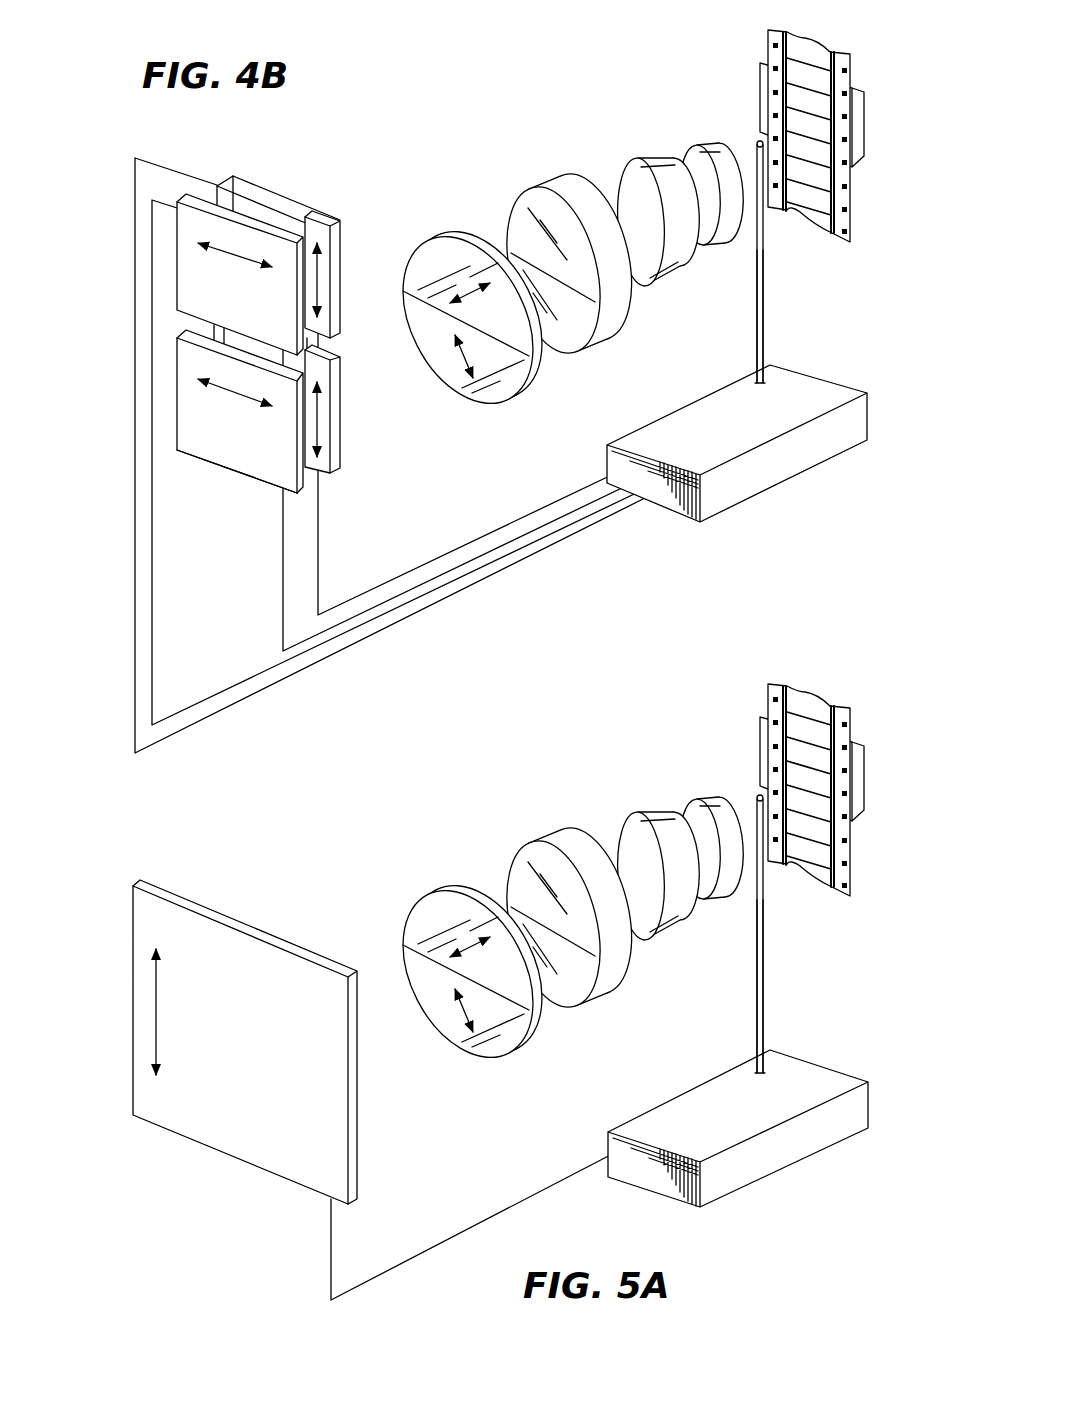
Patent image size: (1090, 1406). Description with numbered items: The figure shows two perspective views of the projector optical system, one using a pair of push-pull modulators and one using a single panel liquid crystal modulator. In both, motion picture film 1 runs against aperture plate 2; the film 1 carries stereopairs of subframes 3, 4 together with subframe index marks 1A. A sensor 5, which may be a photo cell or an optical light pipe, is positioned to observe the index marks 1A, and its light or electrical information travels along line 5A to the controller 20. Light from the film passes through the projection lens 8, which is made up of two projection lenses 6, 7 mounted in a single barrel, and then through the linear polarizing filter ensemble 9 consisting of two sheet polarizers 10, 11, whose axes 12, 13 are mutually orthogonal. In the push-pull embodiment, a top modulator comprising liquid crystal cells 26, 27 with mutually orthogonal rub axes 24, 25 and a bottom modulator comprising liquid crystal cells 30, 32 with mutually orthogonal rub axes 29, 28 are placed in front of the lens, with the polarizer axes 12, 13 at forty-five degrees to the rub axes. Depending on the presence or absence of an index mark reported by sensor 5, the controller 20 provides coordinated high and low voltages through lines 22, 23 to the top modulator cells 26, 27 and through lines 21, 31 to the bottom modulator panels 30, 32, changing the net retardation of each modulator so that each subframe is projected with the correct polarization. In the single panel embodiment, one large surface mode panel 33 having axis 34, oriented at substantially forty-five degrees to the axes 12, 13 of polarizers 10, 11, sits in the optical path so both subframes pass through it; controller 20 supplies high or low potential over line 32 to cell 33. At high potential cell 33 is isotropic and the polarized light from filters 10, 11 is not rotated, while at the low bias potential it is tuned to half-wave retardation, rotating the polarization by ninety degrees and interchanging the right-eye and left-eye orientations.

In FIG. 4B, the motion picture film 1 is at (838, 53).
In FIG. 5A, the motion picture film 1 is at (809, 775).
In FIG. 4B, the subframe index marks 1A is at (777, 68).
In FIG. 5A, the subframe index marks 1A is at (773, 779).
In FIG. 4B, the aperture plate 2 is at (860, 88).
In FIG. 5A, the aperture plate 2 is at (817, 744).
In FIG. 4B, the subframe 3 is at (818, 133).
In FIG. 5A, the subframe 3 is at (839, 785).
In FIG. 4B, the subframe 4 is at (832, 108).
In FIG. 5A, the subframe 4 is at (834, 826).
In FIG. 4B, the sensor 5 is at (757, 143).
In FIG. 5A, the sensor 5 is at (757, 797).
In FIG. 4B, the line 5A is at (763, 285).
In FIG. 5A, the line 5A is at (763, 940).
In FIG. 4B, the projection lens 6 is at (636, 164).
In FIG. 5A, the projection lens 6 is at (660, 855).
In FIG. 4B, the projection lens 7 is at (606, 333).
In FIG. 5A, the projection lens 7 is at (592, 925).
In FIG. 4B, the projection lens 8 is at (533, 186).
In FIG. 5A, the projection lens 8 is at (546, 903).
In FIG. 4B, the linear polarizing filter ensemble 9 is at (403, 277).
In FIG. 5A, the linear polarizing filter ensemble 9 is at (454, 971).
In FIG. 4B, the sheet polarizer 10 is at (418, 248).
In FIG. 5A, the sheet polarizer 10 is at (429, 901).
In FIG. 4B, the sheet polarizer 11 is at (513, 395).
In FIG. 5A, the sheet polarizer 11 is at (518, 1050).
In FIG. 4B, the axis 12 is at (473, 278).
In FIG. 5A, the axis 12 is at (456, 895).
In FIG. 4B, the axis 13 is at (457, 382).
In FIG. 5A, the axis 13 is at (436, 1033).
In FIG. 4B, the controller 20 is at (780, 480).
In FIG. 5A, the controller 20 is at (780, 1169).
In FIG. 4B, the line 21 is at (282, 533).
In FIG. 4B, the line 22 is at (153, 648).
In FIG. 4B, the line 23 is at (238, 703).
In FIG. 4B, the rub axis 24 is at (230, 253).
In FIG. 4B, the rub axis 25 is at (310, 263).
In FIG. 4B, the liquid crystal cell 26 is at (242, 210).
In FIG. 4B, the liquid crystal cell 27 is at (267, 193).
In FIG. 4B, the rub axis 28 is at (230, 393).
In FIG. 4B, the rub axis 29 is at (320, 420).
In FIG. 4B, the liquid crystal cell 30 is at (342, 397).
In FIG. 4B, the line 31 is at (483, 532).
In FIG. 4B, the liquid crystal cell 32 is at (252, 482).
In FIG. 5A, the liquid crystal cell 32 is at (490, 1218).
In FIG. 5A, the surface mode panel 33 is at (230, 1155).
In FIG. 5A, the axis 34 is at (156, 993).